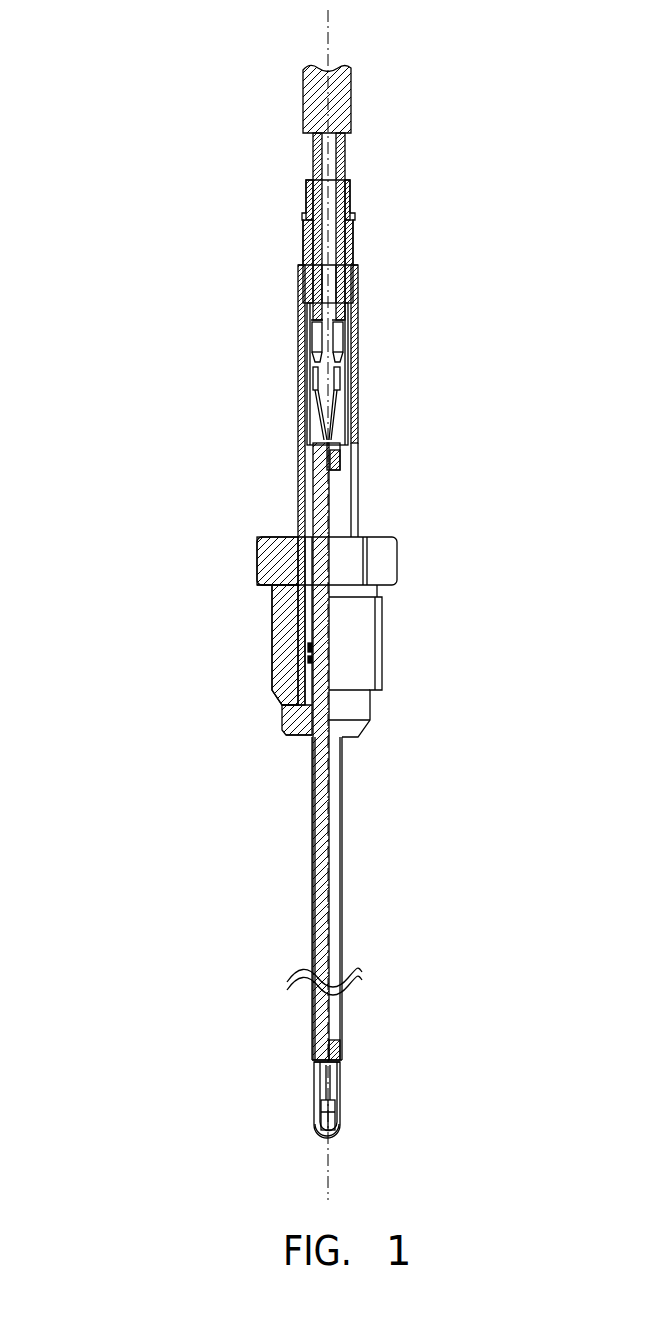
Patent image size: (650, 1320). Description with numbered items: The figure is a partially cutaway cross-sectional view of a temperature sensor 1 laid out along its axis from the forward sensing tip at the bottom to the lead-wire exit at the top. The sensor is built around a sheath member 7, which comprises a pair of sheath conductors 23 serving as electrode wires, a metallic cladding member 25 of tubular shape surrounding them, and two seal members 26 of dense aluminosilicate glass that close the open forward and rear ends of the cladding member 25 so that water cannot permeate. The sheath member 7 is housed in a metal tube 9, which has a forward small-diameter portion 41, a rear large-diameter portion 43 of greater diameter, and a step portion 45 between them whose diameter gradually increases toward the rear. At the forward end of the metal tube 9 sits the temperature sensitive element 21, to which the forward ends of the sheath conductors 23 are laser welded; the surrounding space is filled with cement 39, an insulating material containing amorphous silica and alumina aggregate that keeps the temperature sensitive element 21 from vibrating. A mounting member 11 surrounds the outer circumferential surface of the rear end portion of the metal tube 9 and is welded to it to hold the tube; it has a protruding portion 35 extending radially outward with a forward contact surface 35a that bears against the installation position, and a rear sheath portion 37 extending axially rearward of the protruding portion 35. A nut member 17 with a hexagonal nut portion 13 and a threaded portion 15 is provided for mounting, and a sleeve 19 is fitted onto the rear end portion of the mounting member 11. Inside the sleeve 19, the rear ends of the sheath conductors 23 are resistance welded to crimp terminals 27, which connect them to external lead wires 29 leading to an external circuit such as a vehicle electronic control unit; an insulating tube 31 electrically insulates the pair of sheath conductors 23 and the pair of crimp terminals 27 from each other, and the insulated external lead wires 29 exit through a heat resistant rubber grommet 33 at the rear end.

The temperature sensor 1 is at (128, 199).
The sheath member 7 is at (180, 995).
The metal tube 9 is at (330, 832).
The mounting member 11 is at (182, 652).
The hexagonal nut portion 13 is at (397, 548).
The threaded portion 15 is at (382, 600).
The nut member 17 is at (470, 538).
The sleeve 19 is at (300, 462).
The temperature sensitive element 21 is at (316, 1122).
The sheath conductors 23 is at (316, 420).
The cladding member 25 is at (338, 462).
The seal members 26 is at (340, 455).
The crimp terminals 27 is at (316, 350).
The external lead wires 29 is at (313, 150).
The insulating tube 31 is at (348, 395).
The grommet 33 is at (350, 198).
The protruding portion 35 is at (294, 718).
The forward contact surface 35a is at (298, 733).
The rear sheath portion 37 is at (306, 668).
The cement 39 is at (318, 1103).
The small-diameter portion 41 is at (341, 1110).
The large-diameter portion 43 is at (343, 1015).
The step portion 45 is at (340, 1072).